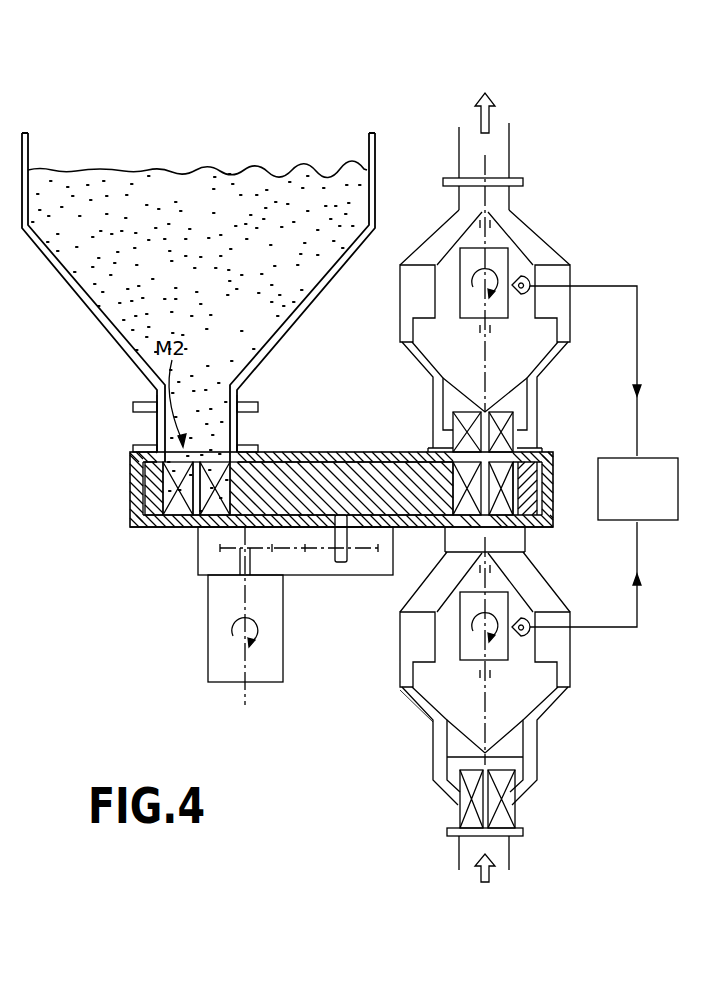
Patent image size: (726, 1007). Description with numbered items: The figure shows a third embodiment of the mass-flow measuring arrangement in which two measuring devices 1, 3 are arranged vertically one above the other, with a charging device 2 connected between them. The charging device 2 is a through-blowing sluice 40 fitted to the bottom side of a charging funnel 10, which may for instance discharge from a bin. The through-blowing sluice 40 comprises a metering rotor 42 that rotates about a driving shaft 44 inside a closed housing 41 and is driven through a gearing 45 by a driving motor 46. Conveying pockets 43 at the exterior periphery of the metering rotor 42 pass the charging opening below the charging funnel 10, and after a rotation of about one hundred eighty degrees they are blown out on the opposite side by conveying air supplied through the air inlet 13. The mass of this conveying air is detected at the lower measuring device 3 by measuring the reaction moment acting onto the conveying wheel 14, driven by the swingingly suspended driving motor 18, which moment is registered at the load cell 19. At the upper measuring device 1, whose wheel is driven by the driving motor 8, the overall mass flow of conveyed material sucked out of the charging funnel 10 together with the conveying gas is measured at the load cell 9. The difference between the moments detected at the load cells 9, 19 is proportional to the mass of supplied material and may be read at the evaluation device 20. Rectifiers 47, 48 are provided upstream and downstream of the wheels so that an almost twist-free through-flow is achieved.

The measuring device 1 is at (388, 325).
The charging device 2 is at (268, 430).
The measuring device 3 is at (388, 709).
The driving motor 8 is at (506, 243).
The load cell 9 is at (533, 281).
The charging funnel 10 is at (103, 333).
The air inlet 13 is at (458, 852).
The conveying wheel 14 is at (427, 720).
The driving motor 18 is at (460, 658).
The load cell 19 is at (524, 642).
The evaluation device 20 is at (668, 522).
The through-blowing sluice 40 is at (110, 496).
The housing 41 is at (129, 518).
The metering rotor 42 is at (346, 483).
The conveying pockets 43 is at (179, 510).
The driving shaft 44 is at (333, 563).
The gearing 45 is at (204, 565).
The driving motor 46 is at (208, 620).
The rectifier 47 is at (455, 440).
The rectifier 48 is at (425, 587).